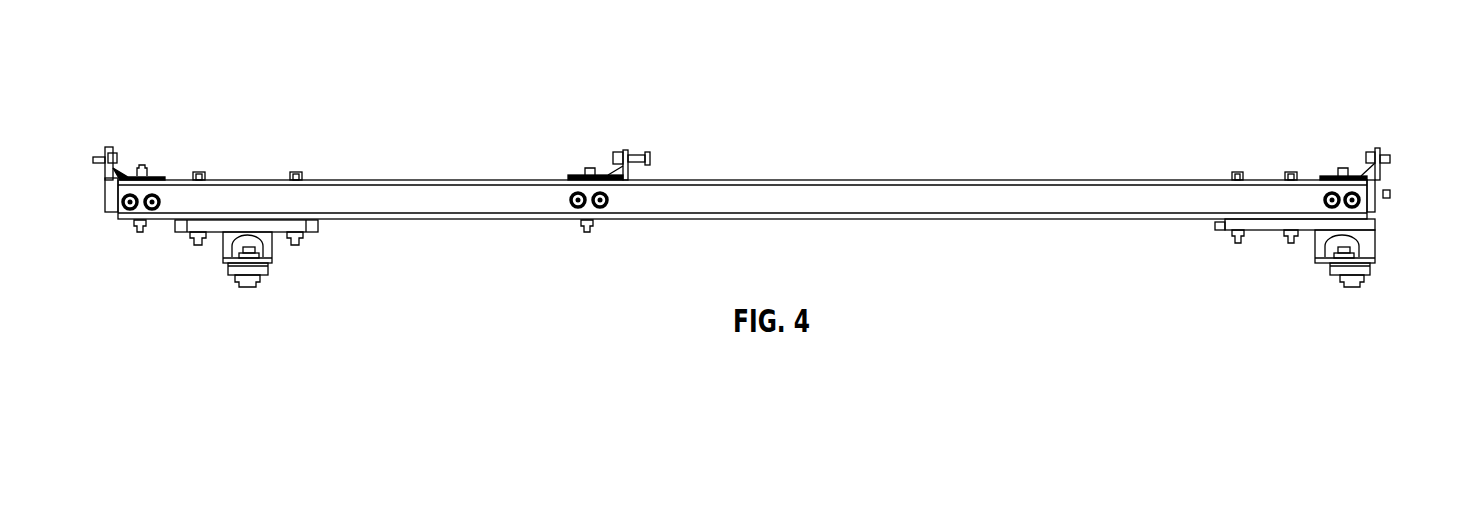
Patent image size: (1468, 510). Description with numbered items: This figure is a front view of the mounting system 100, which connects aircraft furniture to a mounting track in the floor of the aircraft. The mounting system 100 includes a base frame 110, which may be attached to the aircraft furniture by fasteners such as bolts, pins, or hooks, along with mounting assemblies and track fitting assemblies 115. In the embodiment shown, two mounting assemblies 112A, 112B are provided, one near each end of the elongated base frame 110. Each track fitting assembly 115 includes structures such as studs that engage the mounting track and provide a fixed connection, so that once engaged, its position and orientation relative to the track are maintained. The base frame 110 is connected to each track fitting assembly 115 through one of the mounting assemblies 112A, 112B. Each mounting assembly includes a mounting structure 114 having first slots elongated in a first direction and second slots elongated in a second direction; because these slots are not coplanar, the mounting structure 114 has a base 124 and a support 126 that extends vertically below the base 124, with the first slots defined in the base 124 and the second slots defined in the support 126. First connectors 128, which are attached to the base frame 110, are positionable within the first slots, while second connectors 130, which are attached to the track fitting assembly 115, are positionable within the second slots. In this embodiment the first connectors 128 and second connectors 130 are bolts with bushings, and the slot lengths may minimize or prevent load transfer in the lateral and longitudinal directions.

The mounting system 100 is at (498, 110).
The base frame 110 is at (1003, 212).
The mounting assembly 112A is at (175, 223).
The mounting assembly 112B is at (1215, 223).
The mounting structure 114 is at (318, 228).
The track fitting assembly 115 is at (268, 273).
The base 124 is at (215, 225).
The support 126 is at (235, 272).
The first connector 128 is at (200, 172).
The second connector 130 is at (240, 243).